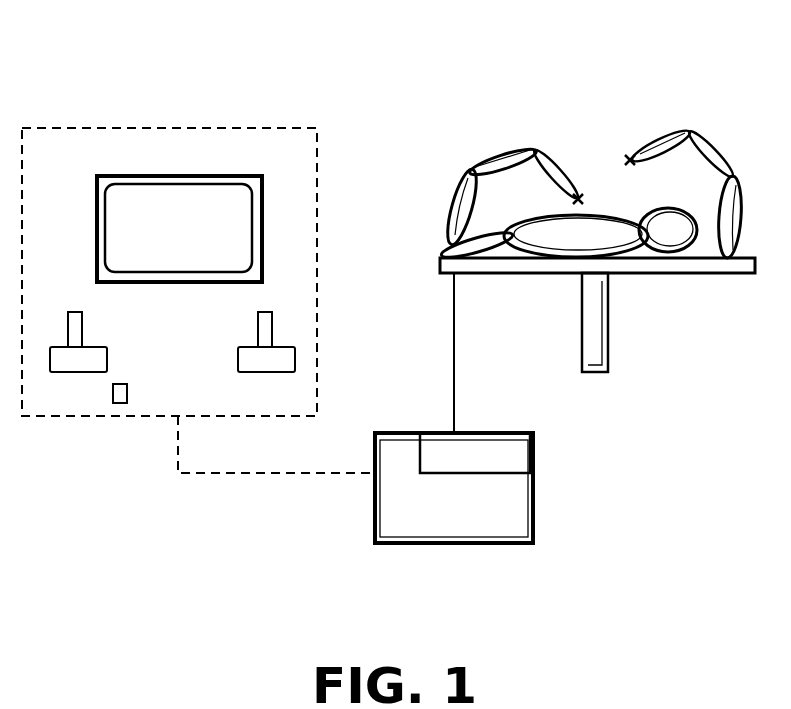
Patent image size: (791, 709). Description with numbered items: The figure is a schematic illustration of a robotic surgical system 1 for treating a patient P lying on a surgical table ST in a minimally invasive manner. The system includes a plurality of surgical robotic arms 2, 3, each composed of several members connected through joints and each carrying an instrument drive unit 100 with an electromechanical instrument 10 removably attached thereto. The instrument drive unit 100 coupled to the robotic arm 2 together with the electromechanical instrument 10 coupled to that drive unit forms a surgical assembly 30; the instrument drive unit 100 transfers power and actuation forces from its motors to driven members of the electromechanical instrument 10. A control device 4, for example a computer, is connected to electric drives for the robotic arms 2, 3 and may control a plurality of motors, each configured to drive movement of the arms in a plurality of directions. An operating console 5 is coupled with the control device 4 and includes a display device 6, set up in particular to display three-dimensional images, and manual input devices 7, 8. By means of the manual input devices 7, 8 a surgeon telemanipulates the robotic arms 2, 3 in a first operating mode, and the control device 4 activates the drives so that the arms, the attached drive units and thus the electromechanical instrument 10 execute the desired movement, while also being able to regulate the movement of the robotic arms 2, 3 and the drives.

The robotic surgical system 1 is at (662, 465).
The surgical robotic arm 2 is at (473, 170).
The surgical robotic arm 3 is at (742, 128).
The control device 4 is at (444, 508).
The operating console 5 is at (109, 95).
The display device 6 is at (176, 238).
The manual input device 7 is at (62, 363).
The manual input device 8 is at (265, 363).
The electromechanical instrument 10 is at (580, 193).
The surgical assembly 30 is at (548, 198).
The instrument drive unit 100 is at (580, 192).
The surgical table ST is at (530, 273).
The patient P is at (612, 240).